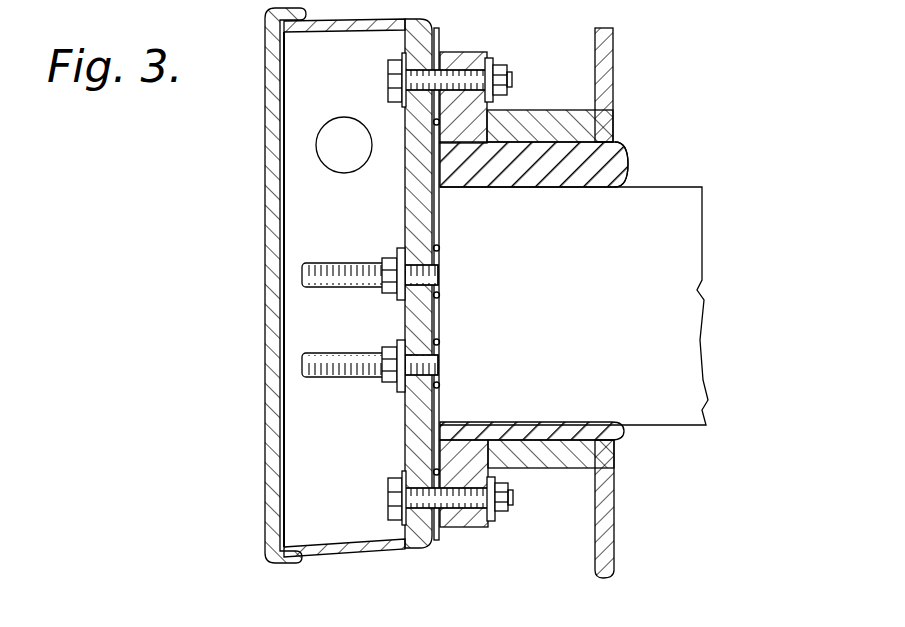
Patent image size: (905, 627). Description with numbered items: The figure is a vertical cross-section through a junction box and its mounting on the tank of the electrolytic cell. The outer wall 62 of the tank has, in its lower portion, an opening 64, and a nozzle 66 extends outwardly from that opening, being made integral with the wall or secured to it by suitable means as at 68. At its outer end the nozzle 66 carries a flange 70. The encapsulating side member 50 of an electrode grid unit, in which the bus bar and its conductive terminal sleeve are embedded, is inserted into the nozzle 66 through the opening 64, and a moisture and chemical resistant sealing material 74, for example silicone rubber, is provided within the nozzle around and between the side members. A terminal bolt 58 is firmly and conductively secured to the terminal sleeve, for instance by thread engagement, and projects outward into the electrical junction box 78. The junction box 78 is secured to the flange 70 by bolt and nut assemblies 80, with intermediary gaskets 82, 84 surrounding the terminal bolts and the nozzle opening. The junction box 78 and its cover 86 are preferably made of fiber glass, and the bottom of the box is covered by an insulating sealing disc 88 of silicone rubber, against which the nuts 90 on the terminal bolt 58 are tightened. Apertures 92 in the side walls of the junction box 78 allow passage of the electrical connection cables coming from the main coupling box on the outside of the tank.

The side member 50 is at (683, 315).
The terminal bolt 58 is at (314, 287).
The outer wall 62 is at (598, 78).
The opening 64 is at (621, 158).
The nozzle 66 is at (563, 456).
The securing means 68 is at (592, 108).
The flange 70 is at (484, 515).
The sealing material 74 is at (541, 182).
The junction box 78 is at (343, 551).
The bolt and nut assemblies 80 is at (456, 72).
The gasket 82 is at (439, 295).
The gasket 84 is at (460, 118).
The cover 86 is at (266, 442).
The insulating sealing disc 88 is at (413, 442).
The nuts 90 is at (386, 293).
The apertures 92 is at (340, 118).